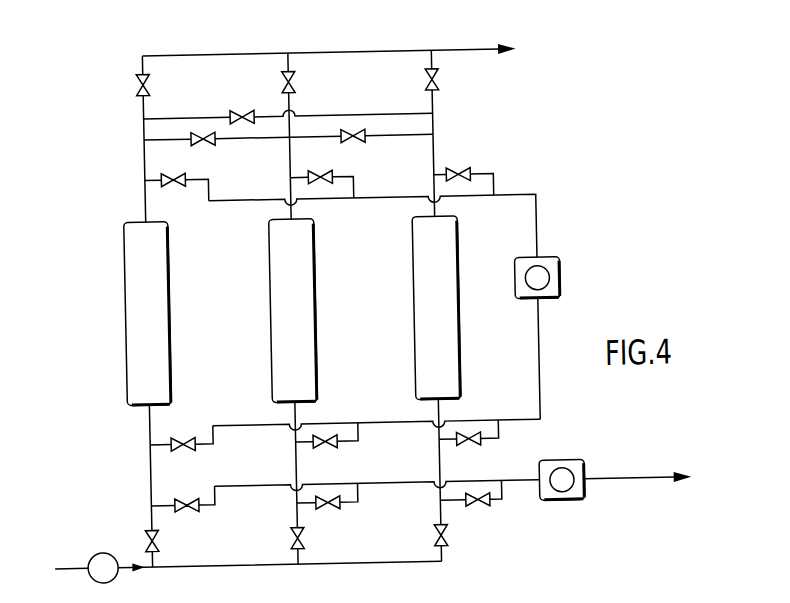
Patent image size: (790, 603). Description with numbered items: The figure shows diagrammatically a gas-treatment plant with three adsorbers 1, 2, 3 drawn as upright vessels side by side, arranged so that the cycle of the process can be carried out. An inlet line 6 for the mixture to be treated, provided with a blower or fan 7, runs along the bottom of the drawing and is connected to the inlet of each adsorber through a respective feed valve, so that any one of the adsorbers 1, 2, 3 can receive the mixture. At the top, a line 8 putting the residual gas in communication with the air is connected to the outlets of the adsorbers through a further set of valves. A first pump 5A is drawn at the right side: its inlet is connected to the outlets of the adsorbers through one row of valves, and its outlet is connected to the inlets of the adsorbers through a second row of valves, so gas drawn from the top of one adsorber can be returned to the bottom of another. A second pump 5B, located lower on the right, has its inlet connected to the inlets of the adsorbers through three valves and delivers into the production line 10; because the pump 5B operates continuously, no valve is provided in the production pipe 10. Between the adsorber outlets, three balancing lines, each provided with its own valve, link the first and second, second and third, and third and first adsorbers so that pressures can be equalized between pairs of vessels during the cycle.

The adsorber 1 is at (147, 312).
The adsorber 2 is at (292, 309).
The adsorber 3 is at (436, 306).
The pump 5A is at (560, 285).
The pump 5B is at (567, 465).
The inlet line 6 is at (78, 564).
The blower or fan 7 is at (108, 554).
The line 8 is at (468, 58).
The production line 10 is at (636, 484).